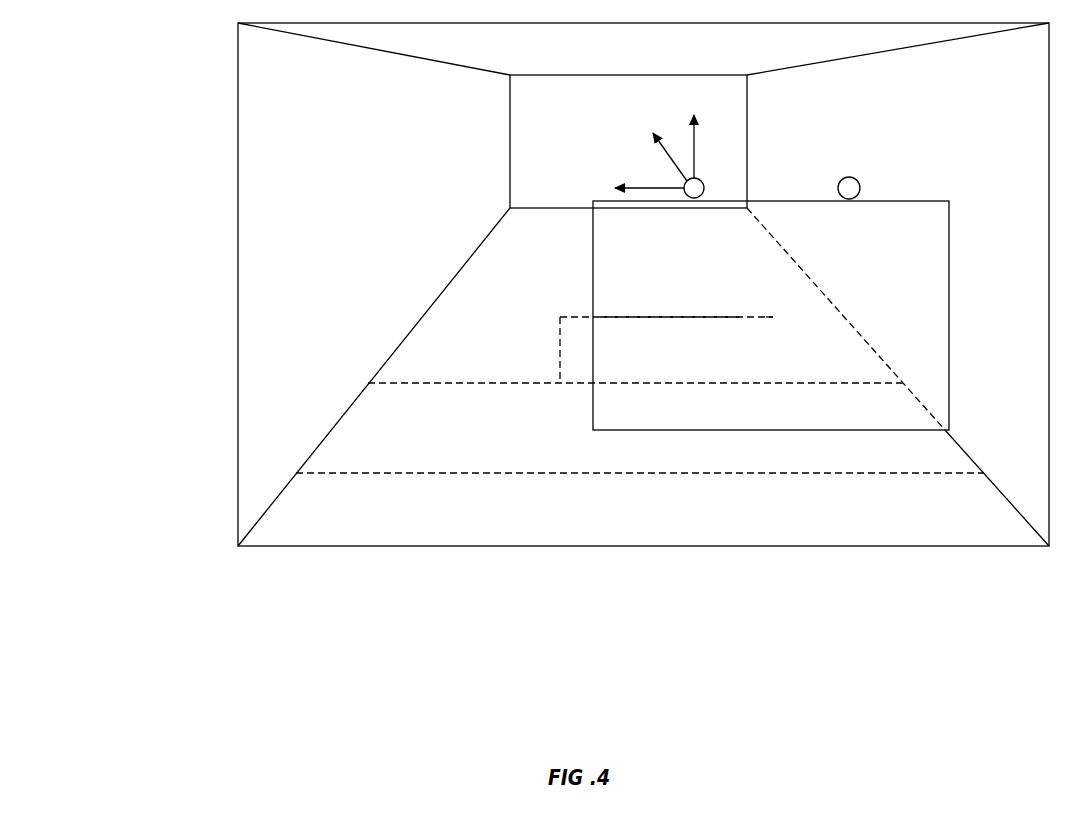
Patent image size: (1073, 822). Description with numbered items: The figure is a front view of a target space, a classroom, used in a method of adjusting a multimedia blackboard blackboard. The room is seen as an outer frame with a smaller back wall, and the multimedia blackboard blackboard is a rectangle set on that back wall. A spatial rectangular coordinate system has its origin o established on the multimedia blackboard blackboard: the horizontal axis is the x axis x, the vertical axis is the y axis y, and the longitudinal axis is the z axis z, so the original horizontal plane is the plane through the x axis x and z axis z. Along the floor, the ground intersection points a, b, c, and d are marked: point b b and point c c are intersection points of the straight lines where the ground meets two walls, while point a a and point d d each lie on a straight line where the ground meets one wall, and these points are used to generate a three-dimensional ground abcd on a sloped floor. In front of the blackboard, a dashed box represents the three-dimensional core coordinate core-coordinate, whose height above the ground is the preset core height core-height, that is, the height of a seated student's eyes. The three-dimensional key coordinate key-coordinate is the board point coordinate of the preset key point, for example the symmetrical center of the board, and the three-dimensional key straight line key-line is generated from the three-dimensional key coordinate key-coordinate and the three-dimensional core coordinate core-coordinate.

The ground intersection point a is at (301, 492).
The ground intersection point b is at (515, 232).
The ground intersection point c is at (742, 228).
The ground intersection point d is at (976, 492).
The origin o is at (702, 187).
The x axis x is at (634, 186).
The y axis y is at (706, 140).
The z axis z is at (657, 147).
The multimedia blackboard is at (848, 432).
The three-dimensional core coordinate core-coordinate is at (558, 316).
The preset core height core-height is at (558, 348).
The three-dimensional key straight line key-line is at (668, 319).
The three-dimensional key coordinate key-coordinate is at (773, 319).